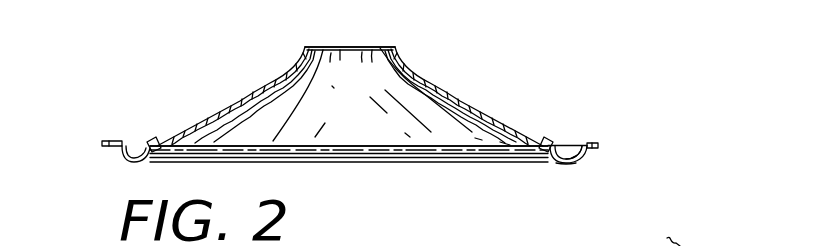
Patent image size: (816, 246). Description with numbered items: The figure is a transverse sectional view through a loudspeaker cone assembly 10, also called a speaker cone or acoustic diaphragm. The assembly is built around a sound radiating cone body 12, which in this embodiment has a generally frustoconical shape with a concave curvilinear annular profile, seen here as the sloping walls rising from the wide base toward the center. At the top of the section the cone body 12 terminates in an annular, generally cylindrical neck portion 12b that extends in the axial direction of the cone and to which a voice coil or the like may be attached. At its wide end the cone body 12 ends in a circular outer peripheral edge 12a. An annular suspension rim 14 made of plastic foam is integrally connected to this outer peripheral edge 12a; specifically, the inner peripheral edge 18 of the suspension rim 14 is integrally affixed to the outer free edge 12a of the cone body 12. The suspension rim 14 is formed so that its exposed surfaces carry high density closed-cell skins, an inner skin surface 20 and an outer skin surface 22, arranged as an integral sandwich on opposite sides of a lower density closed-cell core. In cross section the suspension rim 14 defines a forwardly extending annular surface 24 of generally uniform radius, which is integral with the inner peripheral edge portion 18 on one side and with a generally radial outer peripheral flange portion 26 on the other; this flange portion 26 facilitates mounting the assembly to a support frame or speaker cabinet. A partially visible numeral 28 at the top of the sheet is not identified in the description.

The loudspeaker cone assembly 10 is at (492, 92).
The cone body 12 is at (244, 95).
The outer peripheral edge 12a is at (137, 145).
The neck portion 12b is at (396, 52).
The annular suspension rim 14 is at (579, 137).
The inner peripheral edge 18 is at (519, 146).
The inner skin surface 20 is at (594, 146).
The outer skin surface 22 is at (588, 152).
The forwardly extending annular surface 24 is at (568, 163).
The outer peripheral flange portion 26 is at (101, 143).
The top cap 28 is at (350, 23).